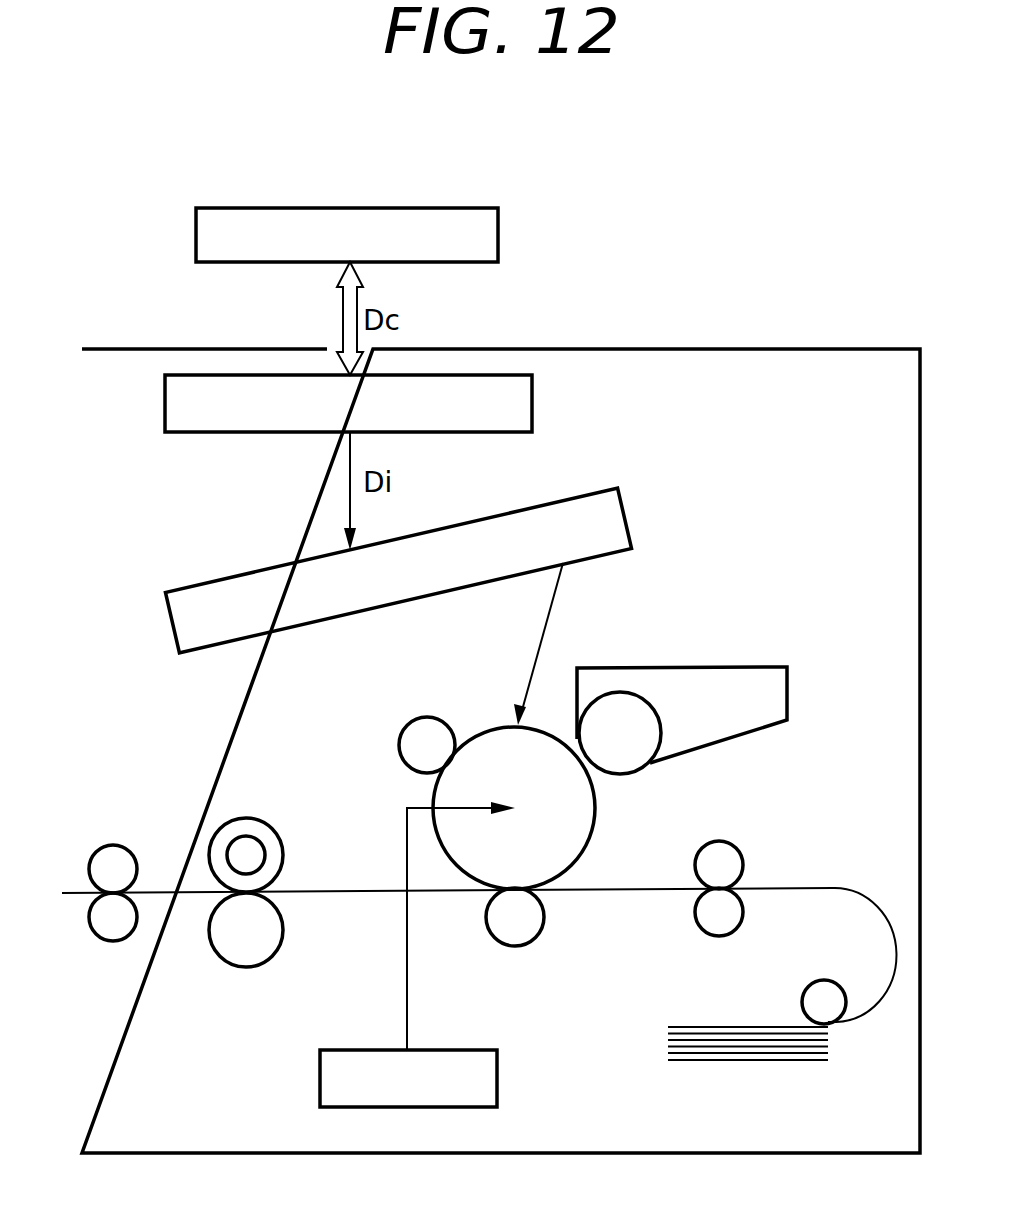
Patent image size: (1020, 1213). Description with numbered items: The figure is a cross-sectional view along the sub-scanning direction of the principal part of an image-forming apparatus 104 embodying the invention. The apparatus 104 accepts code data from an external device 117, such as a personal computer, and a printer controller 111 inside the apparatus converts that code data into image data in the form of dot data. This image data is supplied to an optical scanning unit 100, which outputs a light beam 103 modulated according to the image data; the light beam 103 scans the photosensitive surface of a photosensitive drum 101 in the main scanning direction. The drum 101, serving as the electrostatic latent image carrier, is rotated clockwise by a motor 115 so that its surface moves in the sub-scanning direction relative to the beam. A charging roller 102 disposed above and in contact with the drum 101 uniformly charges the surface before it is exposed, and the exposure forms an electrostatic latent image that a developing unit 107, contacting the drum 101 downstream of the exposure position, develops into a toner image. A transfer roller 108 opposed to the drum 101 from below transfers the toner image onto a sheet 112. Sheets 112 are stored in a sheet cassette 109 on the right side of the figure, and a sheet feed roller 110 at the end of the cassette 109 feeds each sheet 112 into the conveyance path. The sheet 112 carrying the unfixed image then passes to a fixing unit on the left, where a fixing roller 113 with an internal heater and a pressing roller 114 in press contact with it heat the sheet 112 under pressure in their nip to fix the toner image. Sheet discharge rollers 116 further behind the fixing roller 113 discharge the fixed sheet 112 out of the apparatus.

The optical scanning unit 100 is at (230, 577).
The photosensitive drum 101 is at (583, 827).
The charging roller 102 is at (418, 725).
The light beam 103 is at (547, 623).
The image-forming apparatus 104 is at (682, 349).
The developing unit 107 is at (713, 673).
The transfer roller 108 is at (535, 917).
The sheet cassette 109 is at (747, 1060).
The sheet feed roller 110 is at (828, 982).
The printer controller 111 is at (533, 404).
The sheet 112 is at (372, 890).
The fixing roller 113 is at (258, 828).
The pressing roller 114 is at (243, 957).
The motor 115 is at (452, 1048).
The sheet discharge rollers 116 is at (120, 855).
The external device 117 is at (462, 207).